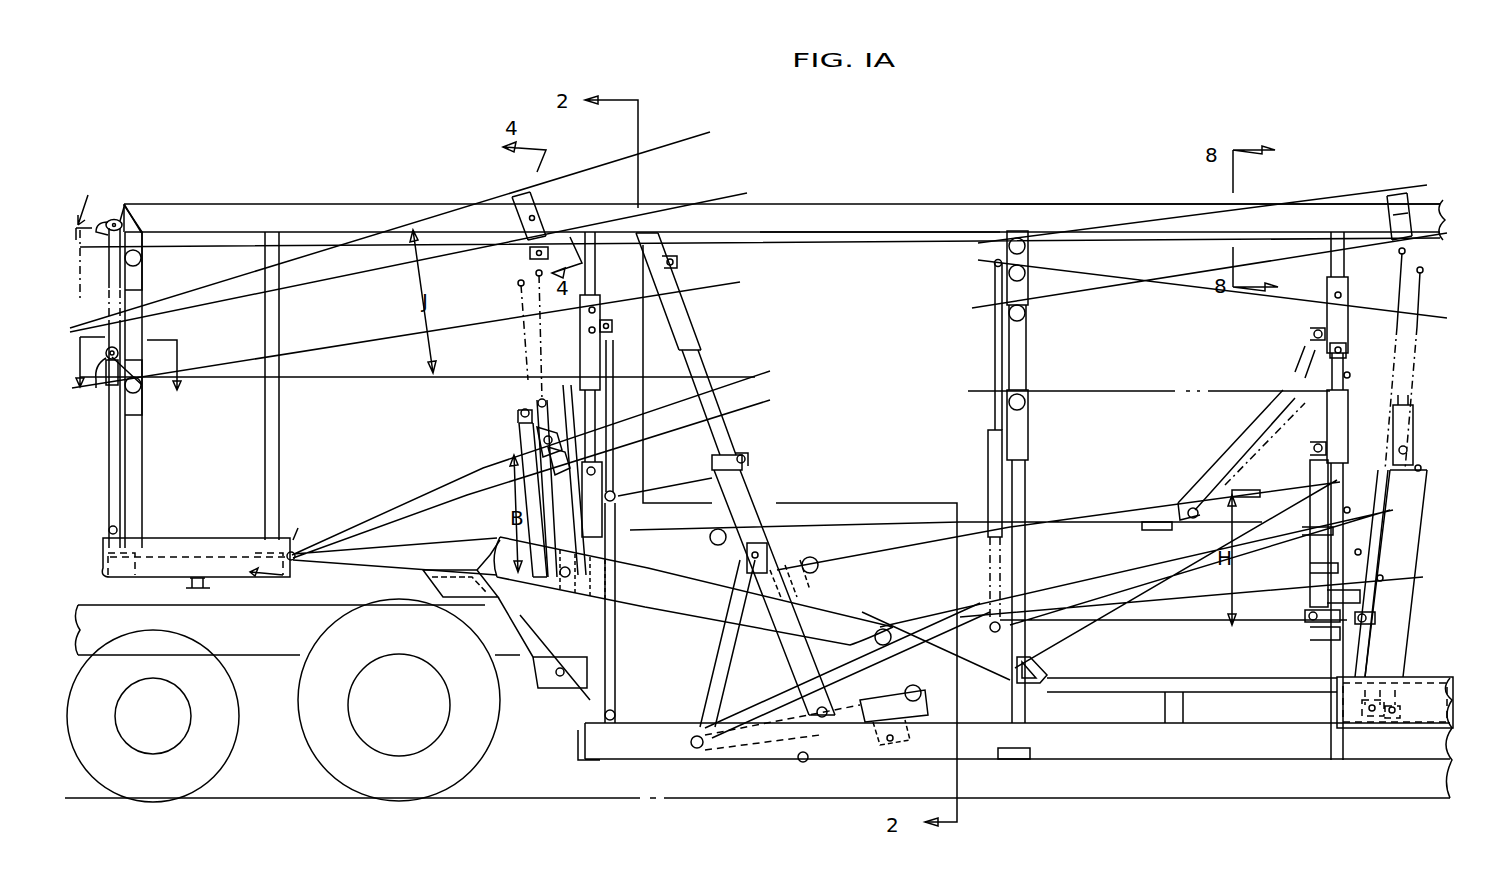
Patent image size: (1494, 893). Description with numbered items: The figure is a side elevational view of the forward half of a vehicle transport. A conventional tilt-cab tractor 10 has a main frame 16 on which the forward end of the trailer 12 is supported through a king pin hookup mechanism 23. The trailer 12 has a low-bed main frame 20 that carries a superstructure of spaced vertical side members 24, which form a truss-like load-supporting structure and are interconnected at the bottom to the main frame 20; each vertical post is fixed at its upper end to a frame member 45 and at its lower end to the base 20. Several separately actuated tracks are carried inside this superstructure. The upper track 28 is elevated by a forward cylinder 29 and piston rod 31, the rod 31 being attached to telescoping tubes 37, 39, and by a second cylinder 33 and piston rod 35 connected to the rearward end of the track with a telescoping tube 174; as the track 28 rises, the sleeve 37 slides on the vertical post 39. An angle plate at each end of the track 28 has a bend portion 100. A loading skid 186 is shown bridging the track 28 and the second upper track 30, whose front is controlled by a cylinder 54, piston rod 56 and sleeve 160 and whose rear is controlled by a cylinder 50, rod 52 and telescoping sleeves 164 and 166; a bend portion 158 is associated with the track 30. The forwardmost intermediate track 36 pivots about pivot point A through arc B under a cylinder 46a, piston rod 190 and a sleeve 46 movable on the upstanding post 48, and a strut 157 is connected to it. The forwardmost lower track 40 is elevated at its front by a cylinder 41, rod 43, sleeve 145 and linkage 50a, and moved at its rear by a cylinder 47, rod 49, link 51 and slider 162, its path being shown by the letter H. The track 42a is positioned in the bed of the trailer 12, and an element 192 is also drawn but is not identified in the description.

The tractor 10 is at (88, 237).
The trailer 12 is at (1206, 766).
The main frame 16 is at (268, 632).
The main frame 20 is at (165, 548).
The king pin hookup mechanism 23 is at (260, 580).
The vertical side members 24 is at (282, 437).
The track 28 is at (665, 148).
The forward cylinder 29 is at (109, 470).
The track 30 is at (1108, 230).
The piston rod 31 is at (114, 216).
The second cylinder 33 is at (518, 438).
The piston rod 35 is at (520, 303).
The intermediate track 36 is at (420, 494).
The sleeve 37 is at (142, 408).
The vertical post 39 is at (142, 467).
The first lower track 40 is at (1138, 505).
The cylinder 41 is at (768, 480).
The track 42a is at (805, 760).
The rod 43 is at (710, 296).
The frame member 45 is at (205, 215).
The sleeve 46 is at (600, 304).
The cylinder 46a is at (620, 530).
The cylinder 47 is at (1310, 558).
The upstanding post 48 is at (600, 392).
The rod 49 is at (1310, 349).
The cylinder 50 is at (1408, 538).
The linkage 50a is at (714, 678).
The link 51 is at (1248, 436).
The rod 52 is at (1418, 368).
The cylinder 54 is at (988, 480).
The piston rod 56 is at (997, 328).
The bend portion 100 is at (546, 214).
The sleeve 145 is at (690, 325).
The strut 157 is at (693, 591).
The bend portion 158 is at (1408, 240).
The sleeve 160 is at (1030, 420).
The slider 162 is at (1355, 395).
The telescoping sleeve 164 is at (1385, 650).
The telescoping sleeve 166 is at (1395, 468).
The telescoping tube 174 is at (535, 406).
The loading skid 186 is at (845, 240).
The piston rod 190 is at (640, 440).
The bar 192 is at (620, 676).